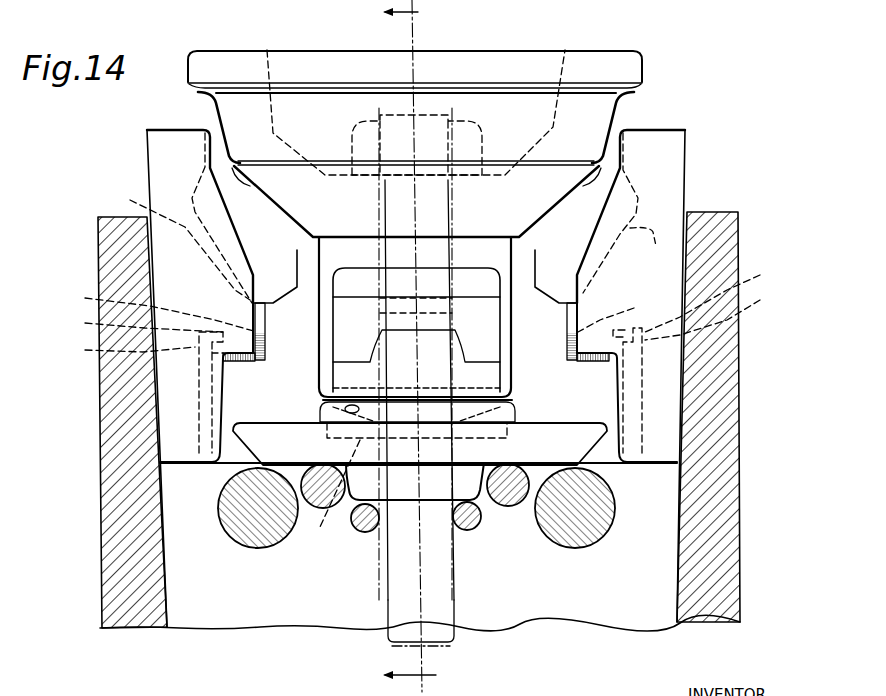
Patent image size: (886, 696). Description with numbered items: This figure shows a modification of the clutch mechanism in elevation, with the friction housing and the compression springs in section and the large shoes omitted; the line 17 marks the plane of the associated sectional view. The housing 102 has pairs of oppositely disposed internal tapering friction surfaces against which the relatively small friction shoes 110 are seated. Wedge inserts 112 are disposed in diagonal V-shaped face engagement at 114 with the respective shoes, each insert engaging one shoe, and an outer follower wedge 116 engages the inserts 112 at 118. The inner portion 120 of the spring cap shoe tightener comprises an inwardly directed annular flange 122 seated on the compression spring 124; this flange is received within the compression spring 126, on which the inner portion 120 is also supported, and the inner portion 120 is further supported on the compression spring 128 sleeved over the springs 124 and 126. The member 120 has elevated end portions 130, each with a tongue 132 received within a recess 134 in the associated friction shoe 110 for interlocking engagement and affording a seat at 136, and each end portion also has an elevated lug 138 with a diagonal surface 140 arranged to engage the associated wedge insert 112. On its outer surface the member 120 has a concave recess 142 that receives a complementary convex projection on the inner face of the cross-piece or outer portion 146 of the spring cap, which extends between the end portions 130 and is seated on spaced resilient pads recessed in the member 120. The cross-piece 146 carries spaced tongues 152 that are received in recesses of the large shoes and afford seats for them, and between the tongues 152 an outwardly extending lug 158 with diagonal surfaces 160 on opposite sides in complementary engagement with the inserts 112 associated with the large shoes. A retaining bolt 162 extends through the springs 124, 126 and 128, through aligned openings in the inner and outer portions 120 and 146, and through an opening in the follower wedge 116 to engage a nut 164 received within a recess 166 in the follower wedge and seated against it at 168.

The section line 17— 17 is at (423, 346).
The housing 102 is at (730, 206).
The relatively small friction shoes 110 is at (147, 131).
The wedge inserts 112 is at (230, 168).
The diagonal V-shaped face engagement 114 is at (379, 240).
The outer follower wedge 116 is at (632, 47).
The engagement of follower wedge with inserts 118 is at (253, 166).
The inner portion of spring cap shoe tightener 120 is at (568, 451).
The inwardly directed annular flange 122 is at (490, 507).
The compression spring 124 is at (473, 528).
The compression spring 126 is at (517, 487).
The compression spring 128 is at (597, 508).
The elevated end portions 130 is at (223, 377).
The tongue 132 is at (419, 299).
The recess 134 is at (419, 325).
The seat 136 is at (356, 307).
The elevated lug 138 is at (253, 308).
The diagonal surface 140 is at (297, 252).
The concave recess 142 is at (336, 499).
The cross-piece or outer portion of spring cap shoe tightener 146 is at (345, 258).
The spaced tongues 152 is at (410, 327).
The outwardly extending lug or projection 158 is at (352, 322).
The diagonal surfaces 160 is at (488, 283).
The retaining bolt 162 is at (437, 635).
The nut 164 is at (367, 118).
The recess 166 is at (570, 78).
The seat of nut 168 is at (483, 115).